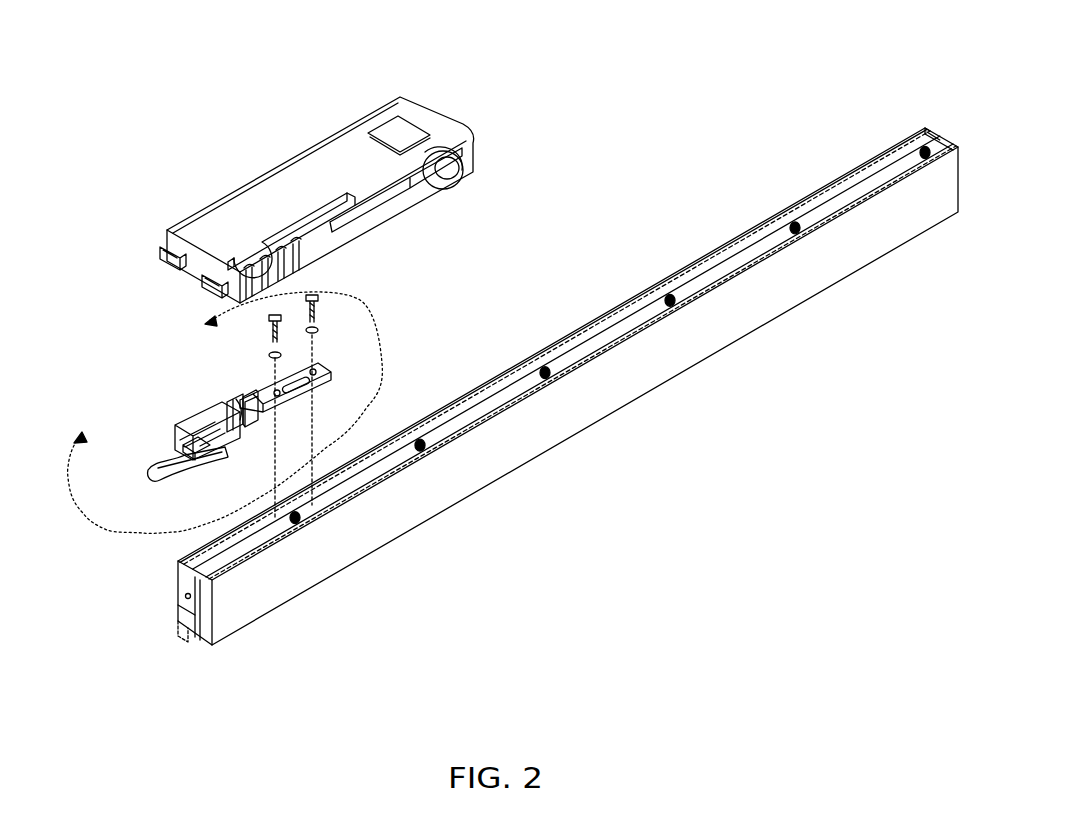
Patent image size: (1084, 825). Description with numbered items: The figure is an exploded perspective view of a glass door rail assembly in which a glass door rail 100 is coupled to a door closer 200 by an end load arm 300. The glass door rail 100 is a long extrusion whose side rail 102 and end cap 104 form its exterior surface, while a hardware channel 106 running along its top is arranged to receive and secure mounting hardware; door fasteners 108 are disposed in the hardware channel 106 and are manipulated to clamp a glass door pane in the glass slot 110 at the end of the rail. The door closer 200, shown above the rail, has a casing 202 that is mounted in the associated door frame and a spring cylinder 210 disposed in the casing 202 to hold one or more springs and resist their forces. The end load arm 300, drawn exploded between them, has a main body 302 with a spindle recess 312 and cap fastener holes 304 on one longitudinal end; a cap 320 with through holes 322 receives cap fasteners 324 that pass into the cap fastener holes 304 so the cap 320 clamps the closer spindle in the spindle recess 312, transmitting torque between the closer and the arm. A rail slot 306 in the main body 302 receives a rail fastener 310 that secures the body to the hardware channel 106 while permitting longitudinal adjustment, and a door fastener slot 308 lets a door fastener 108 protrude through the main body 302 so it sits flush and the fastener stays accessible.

The glass door rail 100 is at (550, 419).
The side rail 102 is at (670, 370).
The end cap 104 is at (212, 622).
The hardware channel 106 is at (592, 347).
The door fastener 108 is at (792, 235).
The glass slot 110 is at (192, 632).
The door closer 200 is at (341, 158).
The casing 202 is at (342, 233).
The spring cylinder 210 is at (452, 127).
The end load arm 300 is at (251, 399).
The main body 302 is at (330, 378).
The cap fastener holes 304 is at (235, 407).
The rail slot 306 is at (278, 360).
The door fastener slot 308 is at (327, 393).
The rail fastener 310 is at (280, 323).
The spindle recess 312 is at (247, 428).
The cap 320 is at (190, 465).
The through holes 322 is at (200, 427).
The cap fasteners 324 is at (162, 472).